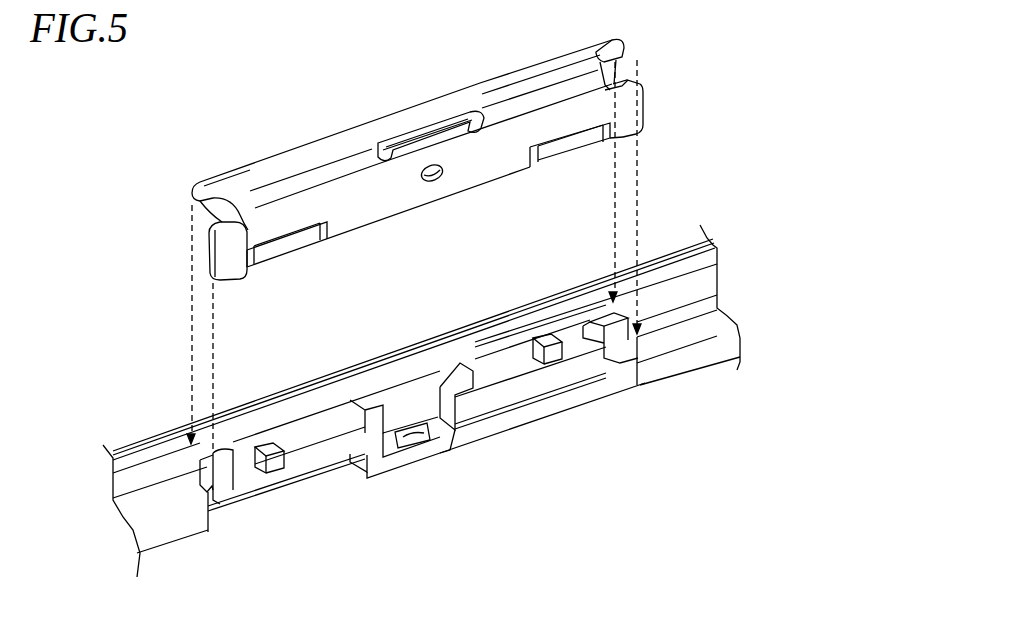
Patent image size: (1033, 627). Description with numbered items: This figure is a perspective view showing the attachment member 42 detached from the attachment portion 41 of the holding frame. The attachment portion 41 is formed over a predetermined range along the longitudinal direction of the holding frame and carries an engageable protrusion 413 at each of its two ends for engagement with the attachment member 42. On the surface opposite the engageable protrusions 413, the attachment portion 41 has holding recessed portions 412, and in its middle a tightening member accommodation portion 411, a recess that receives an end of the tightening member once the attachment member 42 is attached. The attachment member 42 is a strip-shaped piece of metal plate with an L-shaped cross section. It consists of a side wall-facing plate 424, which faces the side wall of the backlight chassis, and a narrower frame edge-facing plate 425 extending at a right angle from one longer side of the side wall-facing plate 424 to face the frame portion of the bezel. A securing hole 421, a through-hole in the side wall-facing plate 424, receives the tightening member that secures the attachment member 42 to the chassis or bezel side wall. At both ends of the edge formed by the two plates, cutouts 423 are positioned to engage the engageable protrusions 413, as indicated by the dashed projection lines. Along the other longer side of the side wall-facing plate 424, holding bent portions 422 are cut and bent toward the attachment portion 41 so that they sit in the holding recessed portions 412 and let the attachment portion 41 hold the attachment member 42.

The attachment portion 41 is at (463, 451).
The tightening member accommodation portion 411 is at (420, 408).
The holding recessed portion 412 is at (313, 478).
The engageable protrusion 413 is at (219, 452).
The attachment member 42 is at (413, 103).
The securing hole 421 is at (434, 182).
The holding bent portion 422 is at (280, 246).
The cutout 423 is at (234, 180).
The side wall-facing plate 424 is at (378, 218).
The frame edge-facing plate 425 is at (323, 150).